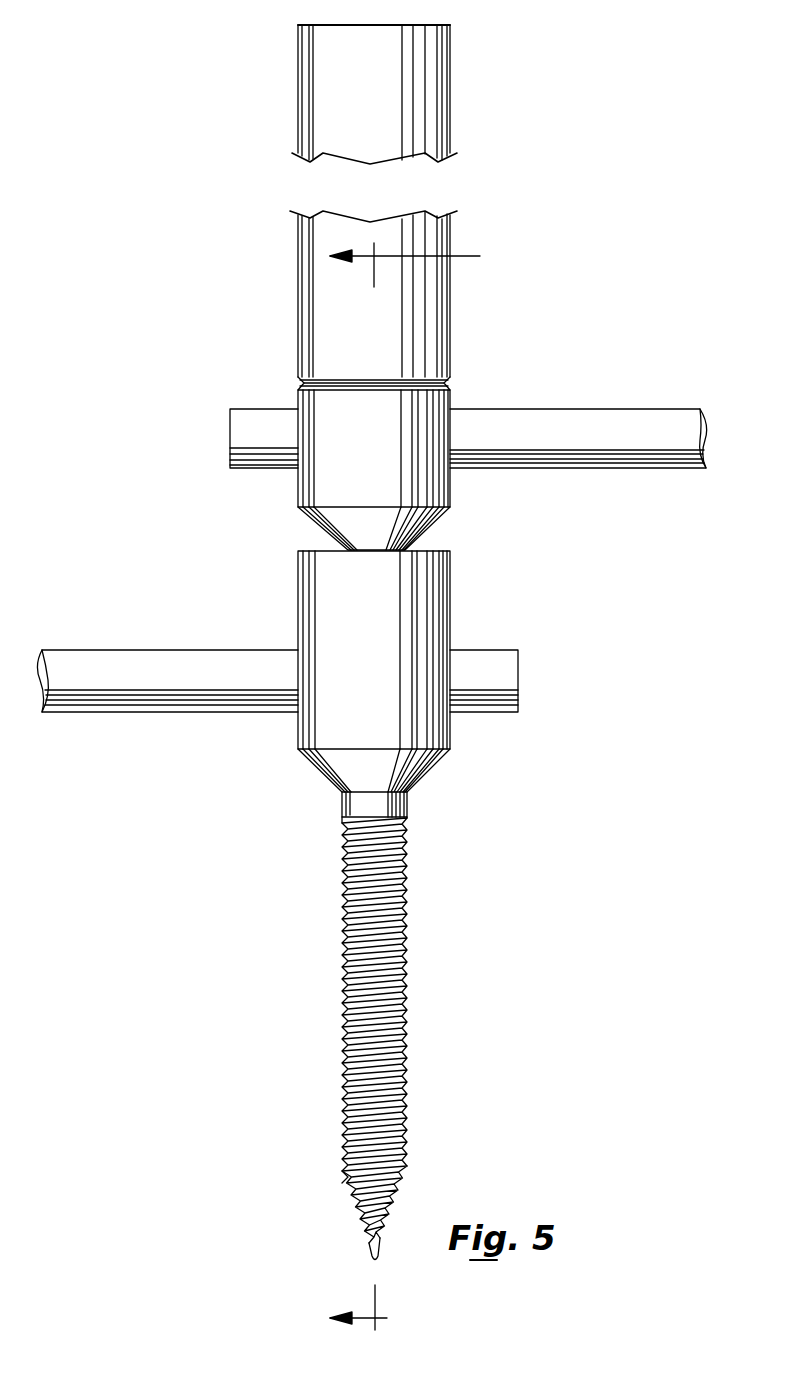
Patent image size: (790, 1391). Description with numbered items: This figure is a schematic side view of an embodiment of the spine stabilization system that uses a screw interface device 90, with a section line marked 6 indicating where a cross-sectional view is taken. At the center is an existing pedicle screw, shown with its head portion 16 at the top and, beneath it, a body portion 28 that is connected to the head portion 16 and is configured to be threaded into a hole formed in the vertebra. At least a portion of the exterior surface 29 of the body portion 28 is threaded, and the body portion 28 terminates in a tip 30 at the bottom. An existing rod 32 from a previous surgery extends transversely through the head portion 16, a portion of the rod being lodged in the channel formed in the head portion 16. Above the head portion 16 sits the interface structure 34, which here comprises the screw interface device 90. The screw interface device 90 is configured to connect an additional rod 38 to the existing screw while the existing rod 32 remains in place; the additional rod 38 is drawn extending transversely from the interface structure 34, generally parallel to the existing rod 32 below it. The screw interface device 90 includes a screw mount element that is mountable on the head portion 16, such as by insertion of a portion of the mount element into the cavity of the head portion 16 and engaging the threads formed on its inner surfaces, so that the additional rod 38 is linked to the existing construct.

The interface structure 34 is at (468, 339).
The screw interface device 90 is at (332, 375).
The additional rod 38 is at (555, 413).
The head portion 16 is at (343, 622).
The existing rod 32 is at (152, 658).
The body portion 28 is at (357, 803).
The exterior surface 29 is at (402, 892).
The tip 30 is at (375, 1263).
The section line 6- 6 is at (498, 268).